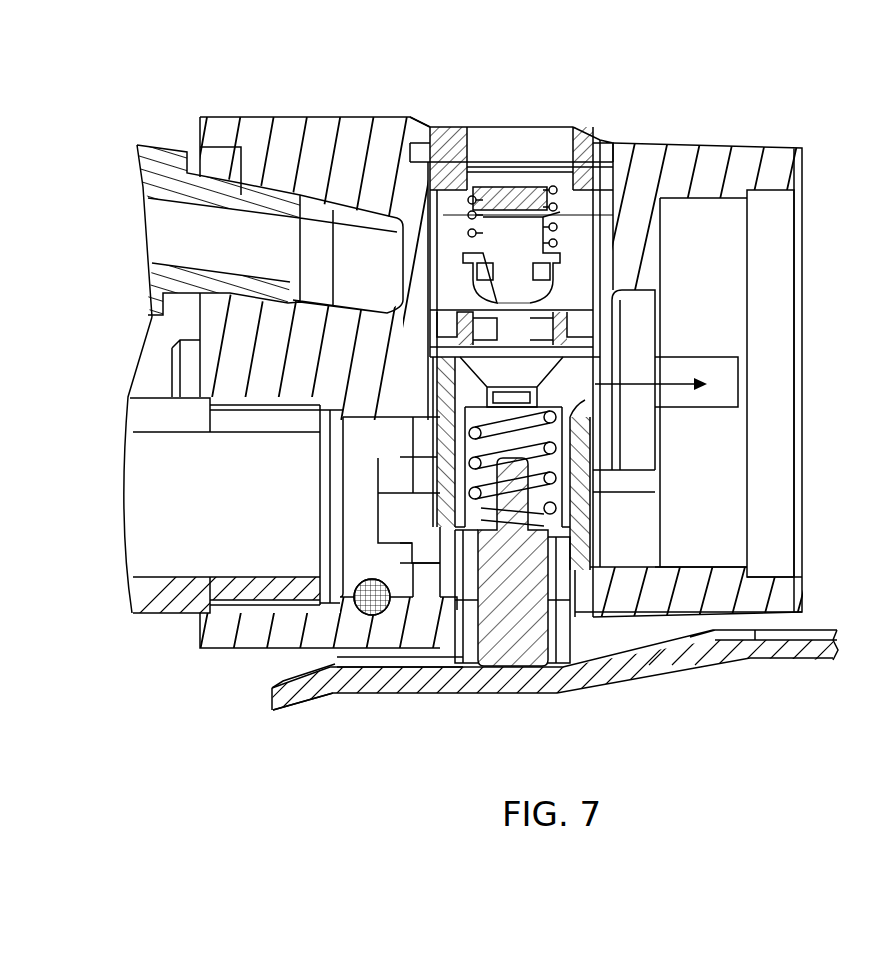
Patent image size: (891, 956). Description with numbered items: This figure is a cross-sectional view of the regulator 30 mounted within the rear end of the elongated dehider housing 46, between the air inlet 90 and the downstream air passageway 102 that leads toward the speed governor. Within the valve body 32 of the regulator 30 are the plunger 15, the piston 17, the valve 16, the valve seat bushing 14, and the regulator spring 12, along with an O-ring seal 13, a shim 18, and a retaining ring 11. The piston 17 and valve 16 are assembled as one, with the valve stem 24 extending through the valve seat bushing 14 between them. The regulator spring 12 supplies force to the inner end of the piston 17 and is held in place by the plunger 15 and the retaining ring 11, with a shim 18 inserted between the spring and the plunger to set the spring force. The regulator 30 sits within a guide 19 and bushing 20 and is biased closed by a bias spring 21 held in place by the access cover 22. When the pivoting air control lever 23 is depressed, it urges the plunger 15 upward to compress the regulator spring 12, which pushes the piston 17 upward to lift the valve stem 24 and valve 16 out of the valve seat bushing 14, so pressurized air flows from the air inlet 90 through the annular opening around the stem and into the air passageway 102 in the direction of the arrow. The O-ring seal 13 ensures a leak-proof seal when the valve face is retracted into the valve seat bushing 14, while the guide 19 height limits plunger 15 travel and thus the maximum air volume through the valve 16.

The retaining ring 11 is at (600, 612).
The regulator spring 12 is at (253, 237).
The O-ring seal 13 is at (507, 305).
The valve seat bushing 14 is at (600, 370).
The plunger 15 is at (515, 650).
The valve 16 is at (512, 273).
The piston 17 is at (472, 397).
The shim 18 is at (470, 250).
The guide 19 is at (472, 633).
The bushing 20 is at (565, 545).
The bias spring 21 is at (557, 267).
The access cover 22 is at (445, 125).
The air control lever 23 is at (272, 695).
The valve stem 24 is at (515, 358).
The regulator 30 is at (740, 95).
The valve body 32 is at (410, 117).
The dehider housing 46 is at (298, 117).
The air inlet 90 is at (160, 135).
The air passageway 102 is at (597, 372).